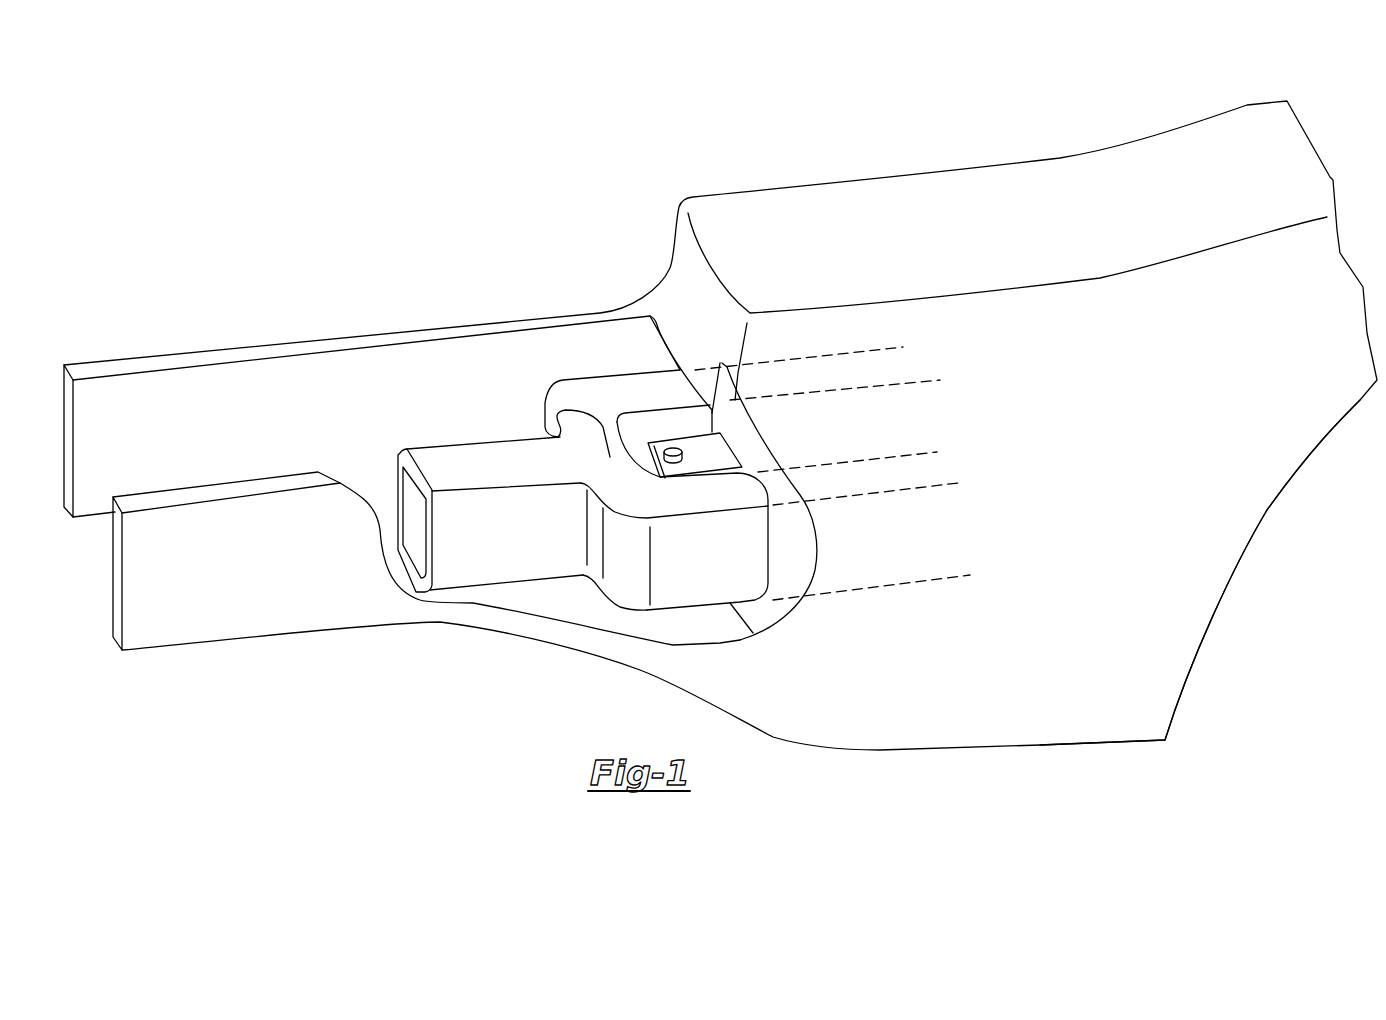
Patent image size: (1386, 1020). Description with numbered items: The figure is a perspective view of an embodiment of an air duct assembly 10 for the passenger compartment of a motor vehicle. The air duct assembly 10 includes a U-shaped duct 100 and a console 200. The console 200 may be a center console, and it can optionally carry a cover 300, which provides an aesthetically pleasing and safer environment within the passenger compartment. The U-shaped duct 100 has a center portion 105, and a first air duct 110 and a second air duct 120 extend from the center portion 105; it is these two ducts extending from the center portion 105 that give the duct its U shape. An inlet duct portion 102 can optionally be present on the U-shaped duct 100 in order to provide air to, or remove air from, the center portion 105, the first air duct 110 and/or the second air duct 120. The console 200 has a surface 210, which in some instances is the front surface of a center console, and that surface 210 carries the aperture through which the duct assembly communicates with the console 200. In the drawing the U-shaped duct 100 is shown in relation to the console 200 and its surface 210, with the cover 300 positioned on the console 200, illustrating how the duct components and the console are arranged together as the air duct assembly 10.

The air duct assembly 10 is at (720, 416).
The U-shaped duct 100 is at (587, 530).
The inlet duct portion 102 is at (485, 455).
The center portion 105 is at (545, 407).
The first air duct 110 is at (657, 390).
The second air duct 120 is at (710, 577).
The console 200 is at (720, 416).
The surface 210 is at (800, 538).
The cover 300 is at (1142, 637).